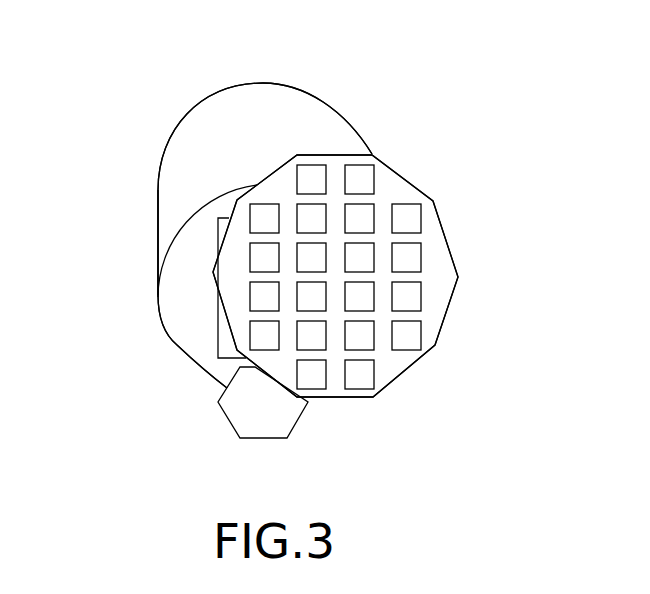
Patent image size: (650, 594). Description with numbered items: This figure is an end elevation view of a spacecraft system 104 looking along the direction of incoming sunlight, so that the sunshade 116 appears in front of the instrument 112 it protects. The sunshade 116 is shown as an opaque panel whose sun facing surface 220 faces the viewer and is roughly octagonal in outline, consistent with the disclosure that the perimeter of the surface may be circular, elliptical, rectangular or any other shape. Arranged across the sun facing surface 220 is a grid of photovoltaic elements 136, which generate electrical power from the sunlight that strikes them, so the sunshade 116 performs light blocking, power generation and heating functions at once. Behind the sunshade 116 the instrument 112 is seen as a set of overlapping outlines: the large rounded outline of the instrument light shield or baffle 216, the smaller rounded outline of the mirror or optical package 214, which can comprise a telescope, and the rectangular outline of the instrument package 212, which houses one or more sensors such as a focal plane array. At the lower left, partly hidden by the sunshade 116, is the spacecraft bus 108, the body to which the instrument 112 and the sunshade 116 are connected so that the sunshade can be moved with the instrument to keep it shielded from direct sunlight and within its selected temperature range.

The spacecraft system 104 is at (405, 124).
The instrument light shield or baffle 216 is at (188, 138).
The instrument 112 is at (146, 193).
The mirror or optical package 214 is at (170, 290).
The instrument package 212 is at (222, 343).
The sunshade 116 is at (462, 233).
The sun facing surface 220 is at (437, 292).
The photovoltaic elements 136 is at (421, 333).
The spacecraft bus 108 is at (290, 435).